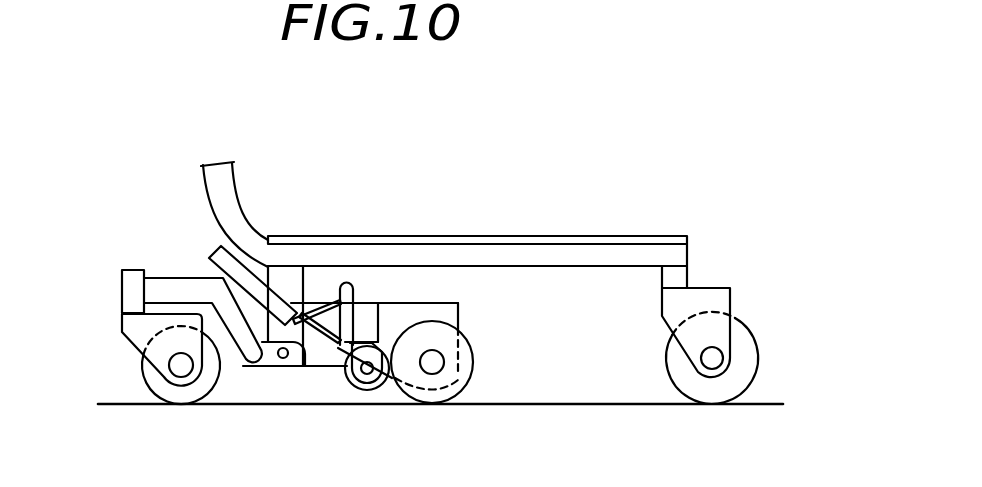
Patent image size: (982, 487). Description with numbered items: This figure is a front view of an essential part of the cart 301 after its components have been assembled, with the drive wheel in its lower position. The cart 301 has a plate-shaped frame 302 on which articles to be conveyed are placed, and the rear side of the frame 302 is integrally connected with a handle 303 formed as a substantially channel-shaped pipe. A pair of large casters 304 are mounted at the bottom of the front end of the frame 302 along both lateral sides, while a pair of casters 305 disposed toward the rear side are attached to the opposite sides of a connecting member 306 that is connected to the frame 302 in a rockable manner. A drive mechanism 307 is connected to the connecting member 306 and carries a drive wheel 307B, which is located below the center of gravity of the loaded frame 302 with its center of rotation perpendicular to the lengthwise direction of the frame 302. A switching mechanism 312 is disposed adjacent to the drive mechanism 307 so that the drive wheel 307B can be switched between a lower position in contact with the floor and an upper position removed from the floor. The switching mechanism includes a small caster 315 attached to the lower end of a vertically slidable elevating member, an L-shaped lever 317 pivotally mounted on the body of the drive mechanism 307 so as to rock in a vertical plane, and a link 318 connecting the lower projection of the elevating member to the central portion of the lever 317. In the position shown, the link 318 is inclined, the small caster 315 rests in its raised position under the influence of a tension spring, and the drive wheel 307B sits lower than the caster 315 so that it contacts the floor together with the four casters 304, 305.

The cart 301 is at (547, 181).
The plate-shaped frame 302 is at (627, 236).
The handle 303 is at (233, 200).
The large caster 304 is at (750, 345).
The caster 305 is at (143, 372).
The connecting member 306 is at (170, 285).
The drive mechanism 307 is at (476, 327).
The drive wheel 307B is at (474, 363).
The switching mechanism 312 is at (327, 274).
The small caster 315 is at (373, 384).
The L-shaped lever 317 is at (212, 249).
The link 318 is at (326, 342).